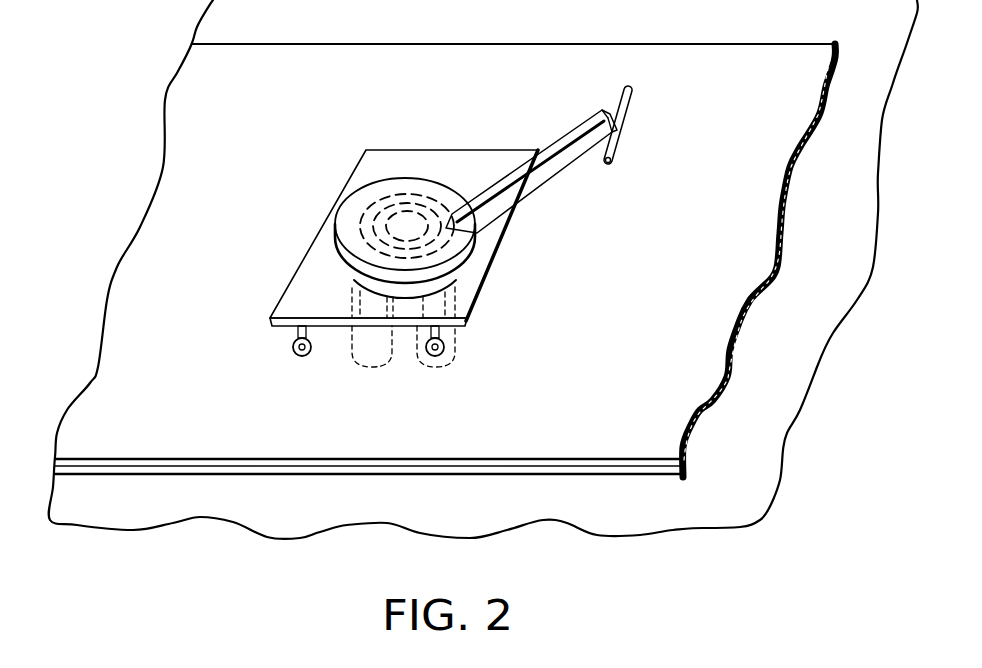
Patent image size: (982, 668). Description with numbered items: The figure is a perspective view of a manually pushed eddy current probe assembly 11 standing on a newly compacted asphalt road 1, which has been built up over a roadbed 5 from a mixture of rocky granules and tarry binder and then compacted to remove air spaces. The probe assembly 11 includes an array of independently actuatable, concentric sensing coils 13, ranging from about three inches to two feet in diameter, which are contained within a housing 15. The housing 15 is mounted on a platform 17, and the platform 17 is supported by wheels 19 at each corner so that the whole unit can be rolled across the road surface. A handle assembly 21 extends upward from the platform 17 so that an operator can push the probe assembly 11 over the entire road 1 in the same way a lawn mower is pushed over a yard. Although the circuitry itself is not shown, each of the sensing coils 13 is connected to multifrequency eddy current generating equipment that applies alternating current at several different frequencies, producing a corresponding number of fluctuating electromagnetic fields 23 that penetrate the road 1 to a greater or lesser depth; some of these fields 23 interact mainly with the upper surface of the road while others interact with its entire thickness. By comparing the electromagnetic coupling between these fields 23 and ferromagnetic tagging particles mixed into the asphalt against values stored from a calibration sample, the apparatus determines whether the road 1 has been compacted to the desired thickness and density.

The road 1 is at (206, 145).
The roadbed 5 is at (843, 227).
The eddy current probe assembly 11 is at (412, 237).
The sensing coils 13 is at (382, 195).
The housing 15 is at (337, 266).
The platform 17 is at (290, 302).
The wheels 19 is at (446, 346).
The handle assembly 21 is at (557, 132).
The fluctuating electromagnetic fields 23 is at (425, 368).